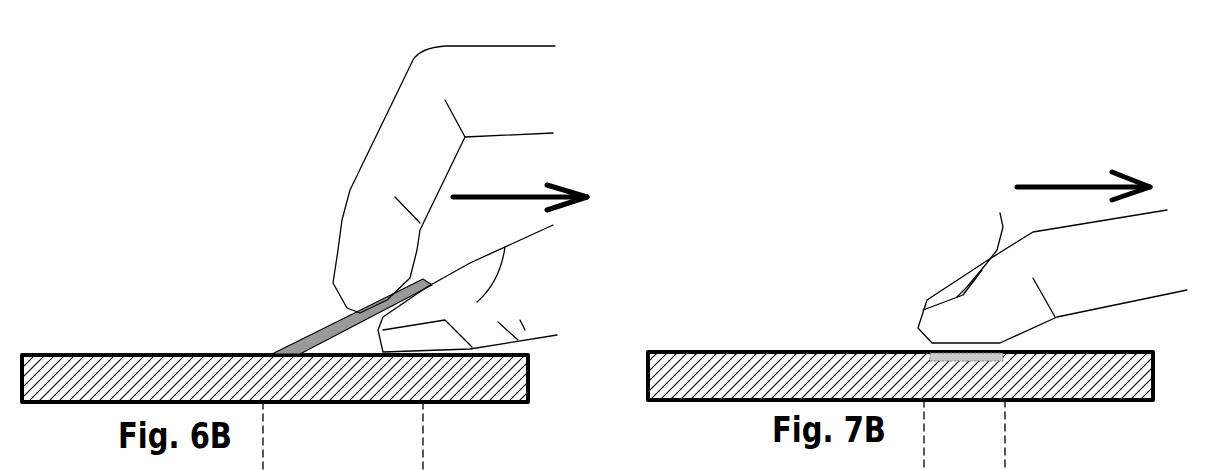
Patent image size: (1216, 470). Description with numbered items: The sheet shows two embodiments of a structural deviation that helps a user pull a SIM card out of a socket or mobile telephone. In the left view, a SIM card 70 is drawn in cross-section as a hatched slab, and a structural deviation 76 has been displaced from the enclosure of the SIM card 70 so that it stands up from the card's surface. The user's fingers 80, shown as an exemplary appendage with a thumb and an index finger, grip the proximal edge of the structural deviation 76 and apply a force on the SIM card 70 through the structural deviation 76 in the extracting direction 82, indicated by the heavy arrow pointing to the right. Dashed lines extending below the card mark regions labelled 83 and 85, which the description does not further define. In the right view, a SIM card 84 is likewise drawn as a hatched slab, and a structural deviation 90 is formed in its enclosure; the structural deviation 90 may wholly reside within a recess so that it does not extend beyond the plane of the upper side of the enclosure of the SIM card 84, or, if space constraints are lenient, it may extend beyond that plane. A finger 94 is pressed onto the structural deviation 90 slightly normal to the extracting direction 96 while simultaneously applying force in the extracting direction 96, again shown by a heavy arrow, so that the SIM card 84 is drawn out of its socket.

In FIG. 6B, the SIM card 70 is at (163, 353).
In FIG. 6B, the structural deviation 76 is at (325, 333).
In FIG. 6B, the user's fingers 80 is at (378, 248).
In FIG. 6B, the extracting direction 82 is at (513, 197).
In FIG. 6B, the scraped region 83 is at (343, 436).
In FIG. 6B, the scraped region boundary 85 is at (483, 469).
In FIG. 7B, the SIM card 84 is at (757, 353).
In FIG. 7B, the structural deviation 90 is at (930, 349).
In FIG. 7B, the finger 94 is at (1000, 213).
In FIG. 7B, the extracting direction 96 is at (1083, 182).